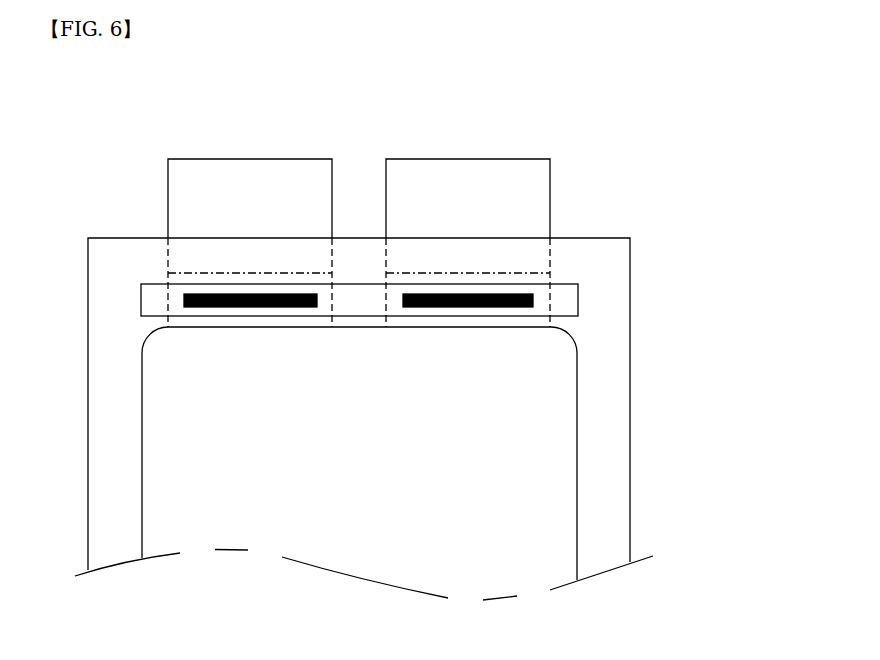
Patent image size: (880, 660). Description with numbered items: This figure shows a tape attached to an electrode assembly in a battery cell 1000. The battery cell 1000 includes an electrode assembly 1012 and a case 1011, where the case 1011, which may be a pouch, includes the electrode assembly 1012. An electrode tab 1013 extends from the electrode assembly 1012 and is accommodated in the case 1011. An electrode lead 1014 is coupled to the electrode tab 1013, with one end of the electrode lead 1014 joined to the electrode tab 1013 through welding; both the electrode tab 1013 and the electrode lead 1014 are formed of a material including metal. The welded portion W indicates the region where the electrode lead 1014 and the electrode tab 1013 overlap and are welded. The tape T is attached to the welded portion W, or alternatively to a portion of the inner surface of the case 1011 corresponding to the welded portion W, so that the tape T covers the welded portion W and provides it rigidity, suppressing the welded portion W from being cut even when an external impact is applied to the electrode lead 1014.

The battery cell 1000 is at (136, 125).
The case 1011 is at (615, 436).
The electrode assembly 1012 is at (545, 377).
The electrode tab 1013 is at (545, 280).
The electrode lead 1014 is at (473, 177).
The tape T is at (570, 295).
The welded portion W is at (533, 300).